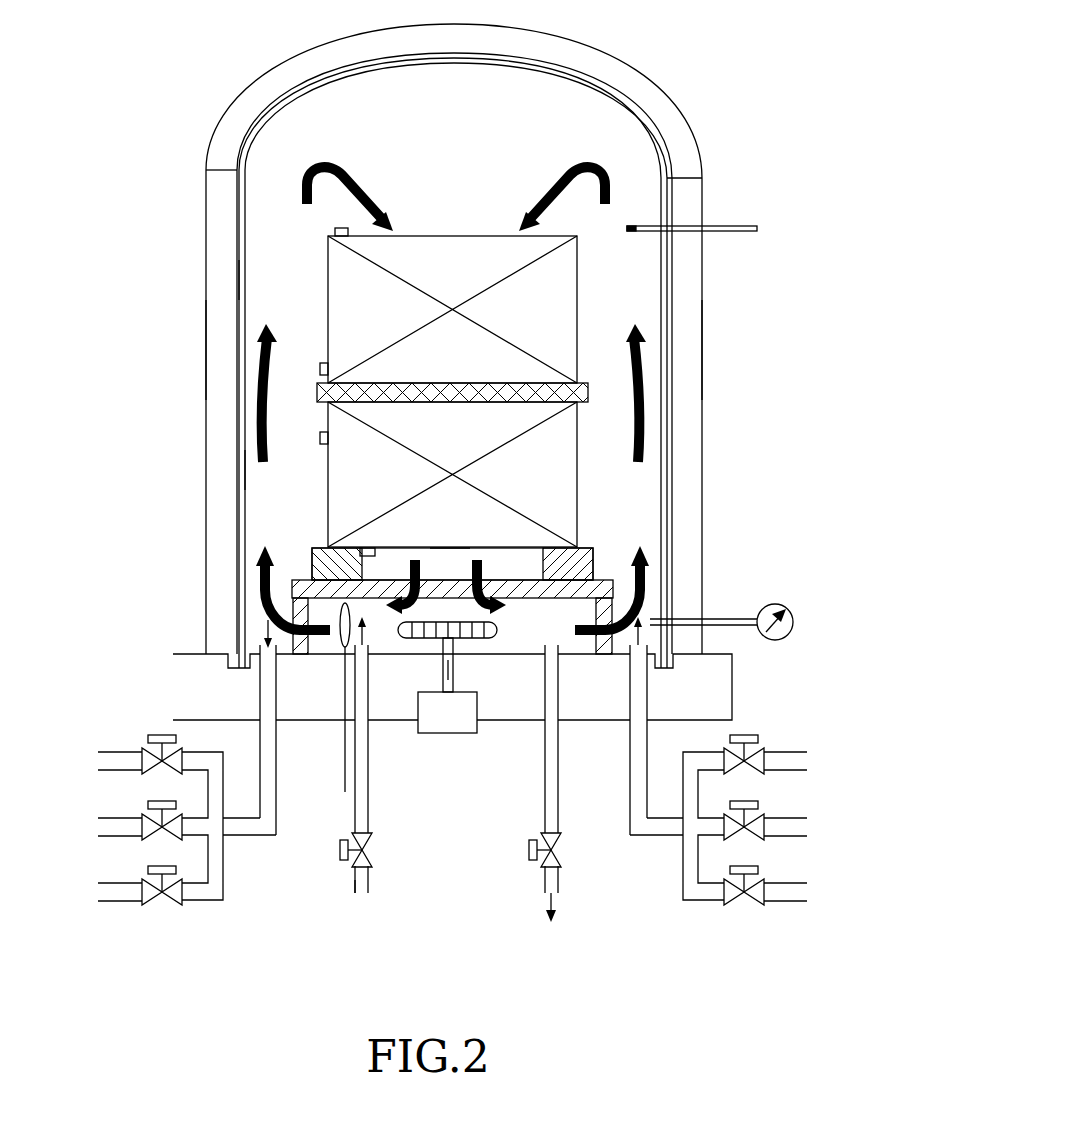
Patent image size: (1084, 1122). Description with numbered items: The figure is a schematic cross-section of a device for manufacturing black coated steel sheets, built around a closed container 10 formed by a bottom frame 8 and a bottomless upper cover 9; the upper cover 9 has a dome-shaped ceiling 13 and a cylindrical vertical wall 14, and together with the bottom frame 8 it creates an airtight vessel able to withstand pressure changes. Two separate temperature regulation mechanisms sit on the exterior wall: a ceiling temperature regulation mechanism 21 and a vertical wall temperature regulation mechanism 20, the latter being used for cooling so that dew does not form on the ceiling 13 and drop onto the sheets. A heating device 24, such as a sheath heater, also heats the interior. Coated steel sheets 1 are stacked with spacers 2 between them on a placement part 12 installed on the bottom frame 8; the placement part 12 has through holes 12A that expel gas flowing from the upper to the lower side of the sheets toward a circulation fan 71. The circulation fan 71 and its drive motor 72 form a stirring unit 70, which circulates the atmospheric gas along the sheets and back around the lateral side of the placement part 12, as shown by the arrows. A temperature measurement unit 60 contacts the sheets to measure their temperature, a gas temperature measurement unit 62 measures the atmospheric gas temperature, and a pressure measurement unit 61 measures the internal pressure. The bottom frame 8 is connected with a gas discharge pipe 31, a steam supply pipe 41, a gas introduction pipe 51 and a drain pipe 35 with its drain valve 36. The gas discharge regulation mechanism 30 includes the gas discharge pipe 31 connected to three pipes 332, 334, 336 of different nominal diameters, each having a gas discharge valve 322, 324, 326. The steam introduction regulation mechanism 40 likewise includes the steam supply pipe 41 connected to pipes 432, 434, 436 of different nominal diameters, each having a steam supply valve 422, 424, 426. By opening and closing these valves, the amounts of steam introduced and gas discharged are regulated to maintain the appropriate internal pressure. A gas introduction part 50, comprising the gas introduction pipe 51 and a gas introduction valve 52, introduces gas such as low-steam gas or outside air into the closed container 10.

The closed container 10 is at (664, 47).
The ceiling temperature regulation mechanism 21 is at (300, 62).
The vertical wall temperature regulation mechanism 20 is at (208, 355).
The ceiling 13 is at (432, 66).
The vertical wall 14 is at (246, 283).
The upper cover 9 is at (240, 470).
The gas temperature measurement unit 62 is at (733, 226).
The coated steel sheets 1 is at (556, 310).
The spacers 2 is at (576, 388).
The temperature measurement unit 60 is at (335, 230).
The placement part 12 is at (584, 556).
The through holes 12A is at (450, 562).
The heating device 24 is at (343, 648).
The bottom frame 8 is at (192, 658).
The circulation fan 71 is at (500, 628).
The drive motor 72 is at (458, 733).
The stirring unit 70 is at (495, 690).
The pressure measurement unit 61 is at (772, 604).
The gas discharge pipe 31 is at (262, 745).
The steam supply pipe 41 is at (643, 758).
The gas introduction pipe 51 is at (364, 760).
The drain pipe 35 is at (556, 775).
The gas introduction valve 52 is at (340, 852).
The drain valve 36 is at (529, 852).
The gas introduction part 50 is at (393, 870).
The gas discharge regulation mechanism 30 is at (102, 700).
The gas discharge valve 326 is at (160, 735).
The gas discharge valve 324 is at (160, 801).
The gas discharge valve 322 is at (160, 866).
The pipe 336 is at (118, 752).
The pipe 334 is at (118, 818).
The pipe 332 is at (118, 883).
The steam introduction regulation mechanism 40 is at (780, 690).
The steam supply valve 426 is at (746, 735).
The steam supply valve 424 is at (746, 801).
The steam supply valve 422 is at (746, 866).
The pipe 436 is at (790, 752).
The pipe 434 is at (790, 818).
The pipe 432 is at (790, 883).